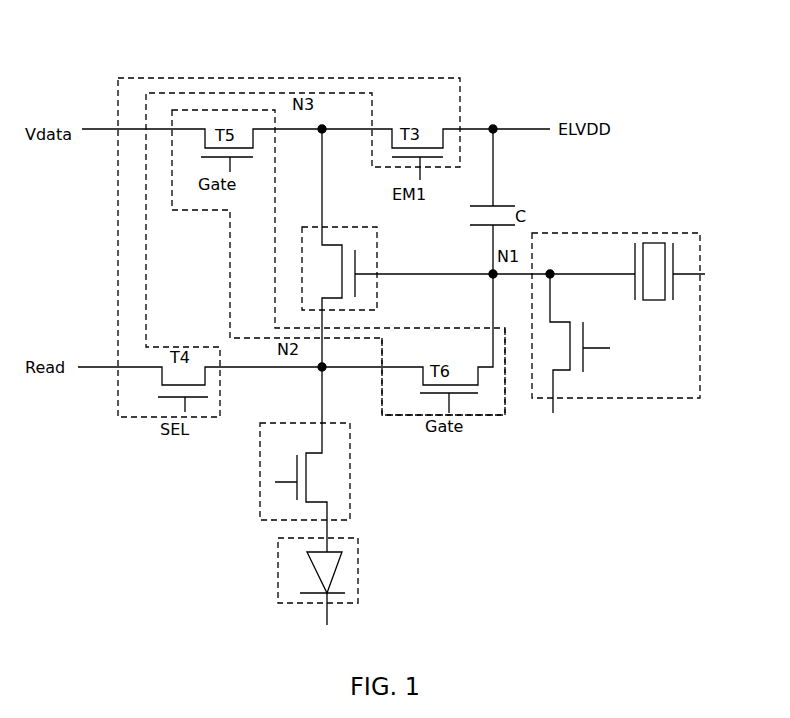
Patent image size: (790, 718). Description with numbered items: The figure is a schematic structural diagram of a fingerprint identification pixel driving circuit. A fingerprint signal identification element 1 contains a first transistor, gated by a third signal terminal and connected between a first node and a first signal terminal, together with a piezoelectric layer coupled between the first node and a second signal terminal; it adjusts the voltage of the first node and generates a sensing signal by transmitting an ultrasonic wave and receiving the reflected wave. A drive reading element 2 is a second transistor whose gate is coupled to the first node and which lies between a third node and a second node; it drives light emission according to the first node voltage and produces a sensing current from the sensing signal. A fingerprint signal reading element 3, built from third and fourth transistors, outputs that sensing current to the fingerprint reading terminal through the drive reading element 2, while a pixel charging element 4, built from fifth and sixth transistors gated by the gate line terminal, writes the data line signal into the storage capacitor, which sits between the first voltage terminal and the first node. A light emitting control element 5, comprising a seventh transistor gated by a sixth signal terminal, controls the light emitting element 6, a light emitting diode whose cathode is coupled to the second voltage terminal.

The fingerprint signal identification element 1 is at (652, 232).
The drive reading element 2 is at (377, 260).
The fingerprint signal reading element 3 is at (348, 78).
The pixel charging element 4 is at (478, 417).
The light emitting control element 5 is at (350, 475).
The light emitting element 6 is at (358, 578).